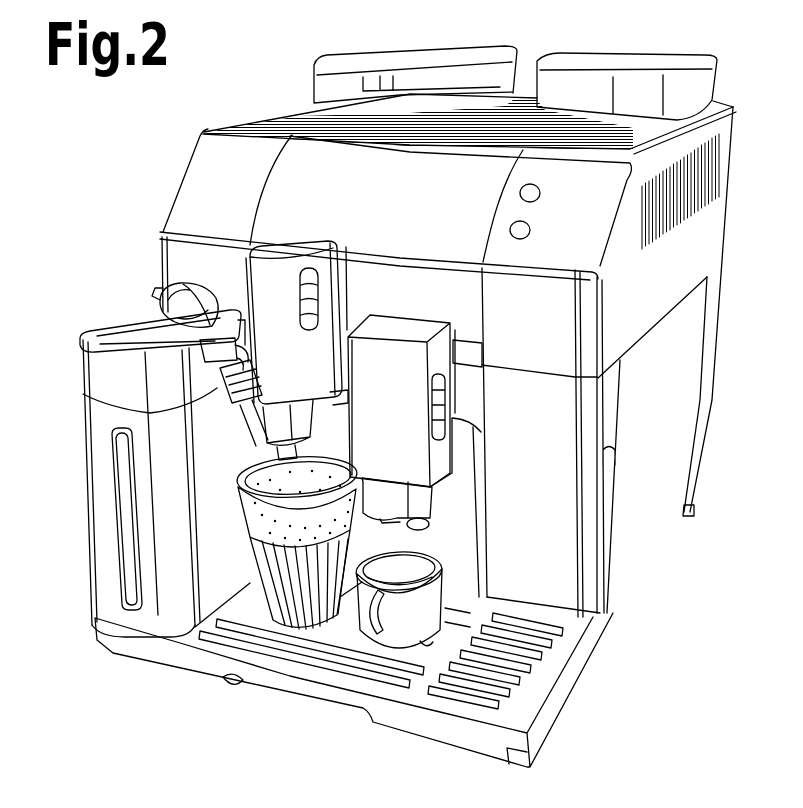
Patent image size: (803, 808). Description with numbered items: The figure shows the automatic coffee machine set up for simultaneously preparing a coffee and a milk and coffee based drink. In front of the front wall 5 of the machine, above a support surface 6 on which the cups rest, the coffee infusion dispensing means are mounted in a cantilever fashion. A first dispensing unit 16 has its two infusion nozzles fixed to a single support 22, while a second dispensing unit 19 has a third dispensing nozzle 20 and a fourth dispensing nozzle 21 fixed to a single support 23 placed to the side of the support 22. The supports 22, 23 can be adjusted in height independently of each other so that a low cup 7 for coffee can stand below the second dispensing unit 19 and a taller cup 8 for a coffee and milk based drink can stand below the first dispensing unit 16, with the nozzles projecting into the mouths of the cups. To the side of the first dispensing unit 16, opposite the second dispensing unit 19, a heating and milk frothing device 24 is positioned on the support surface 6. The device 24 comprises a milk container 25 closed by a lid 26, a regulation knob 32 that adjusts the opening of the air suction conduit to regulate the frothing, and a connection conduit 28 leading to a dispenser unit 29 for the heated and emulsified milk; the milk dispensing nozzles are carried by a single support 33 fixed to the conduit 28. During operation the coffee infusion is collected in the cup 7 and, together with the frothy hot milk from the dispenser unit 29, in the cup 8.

The front wall 5 is at (355, 184).
The surface 6 is at (405, 674).
The cup 7 is at (423, 614).
The cup 8 is at (297, 606).
The first dispensing unit 16 is at (306, 420).
The second dispensing unit 19 is at (397, 495).
The third dispensing nozzle 20 is at (423, 529).
The fourth dispensing nozzle 21 is at (430, 518).
The support 22 is at (270, 292).
The support 23 is at (407, 359).
The heating and milk frothing device 24 is at (104, 404).
The milk container 25 is at (106, 468).
The lid 26 is at (114, 325).
The connection conduit 28 is at (215, 355).
The dispenser unit 29 is at (251, 421).
The regulation knob 32 is at (160, 293).
The support 33 is at (228, 376).